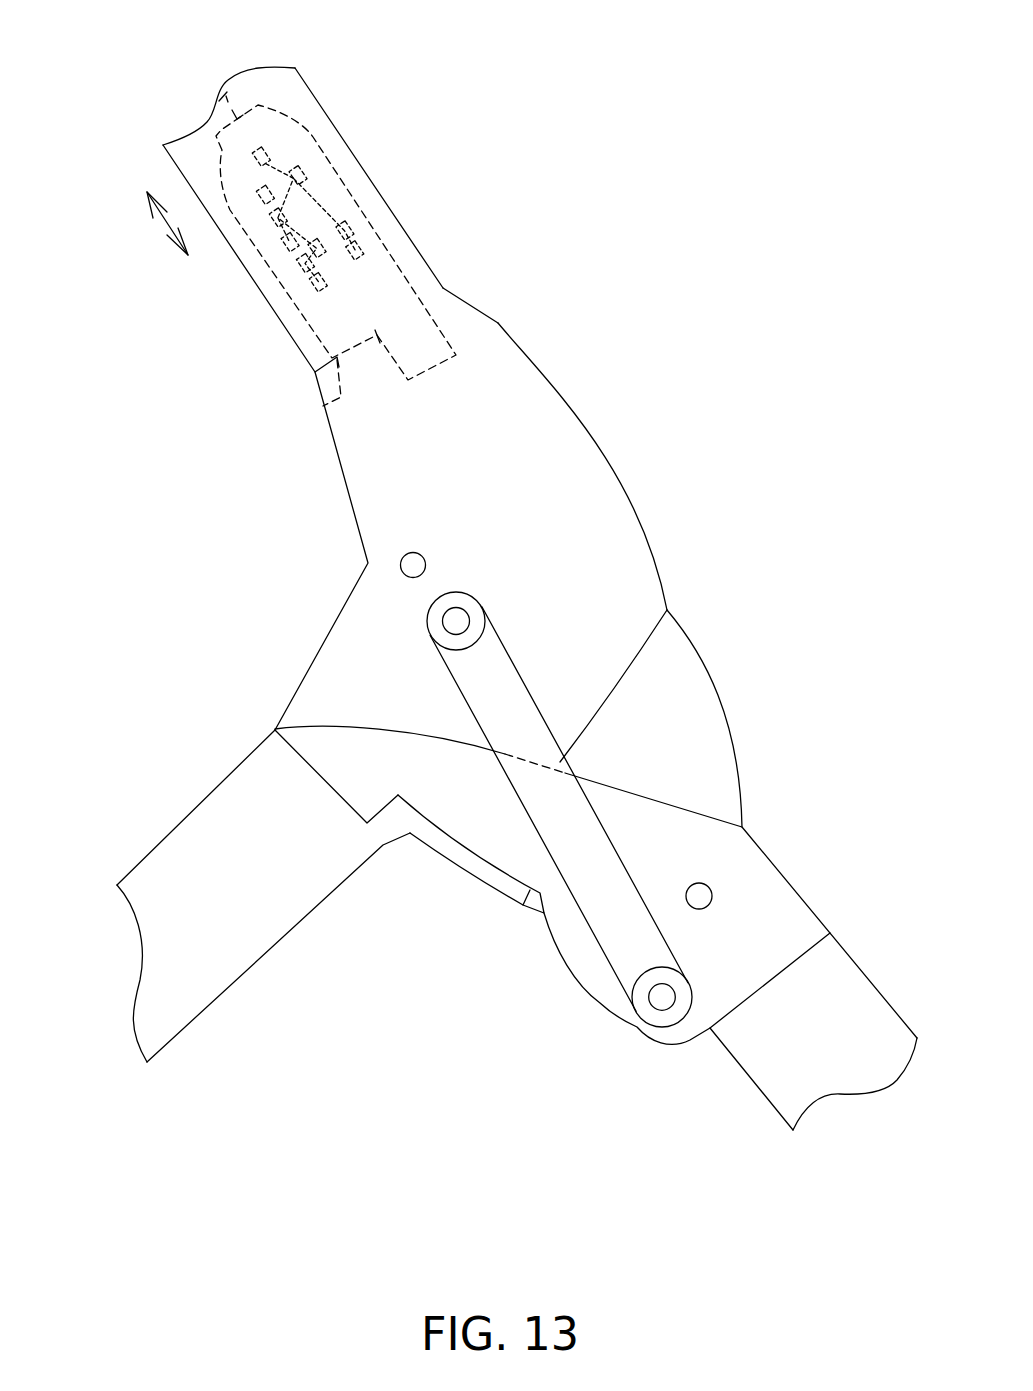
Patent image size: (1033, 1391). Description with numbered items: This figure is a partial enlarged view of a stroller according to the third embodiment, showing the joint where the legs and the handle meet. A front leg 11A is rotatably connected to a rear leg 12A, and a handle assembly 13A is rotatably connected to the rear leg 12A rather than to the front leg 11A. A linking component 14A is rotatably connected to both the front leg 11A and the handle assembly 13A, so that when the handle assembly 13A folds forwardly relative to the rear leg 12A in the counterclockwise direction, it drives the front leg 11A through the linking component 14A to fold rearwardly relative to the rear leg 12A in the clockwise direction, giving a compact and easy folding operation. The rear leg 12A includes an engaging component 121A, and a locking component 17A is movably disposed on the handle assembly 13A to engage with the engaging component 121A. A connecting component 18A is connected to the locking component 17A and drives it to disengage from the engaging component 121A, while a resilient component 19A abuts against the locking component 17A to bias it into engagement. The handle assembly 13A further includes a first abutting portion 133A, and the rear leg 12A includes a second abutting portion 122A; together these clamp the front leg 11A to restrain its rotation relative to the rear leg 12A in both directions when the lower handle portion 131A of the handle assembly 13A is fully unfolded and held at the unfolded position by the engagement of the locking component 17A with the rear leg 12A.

The front leg 11A is at (820, 1067).
The rear leg 12A is at (202, 837).
The engaging component 121A is at (373, 372).
The second abutting portion 122A is at (517, 753).
The handle assembly 13A is at (383, 134).
The lower handle portion 131A is at (183, 152).
The first abutting portion 133A is at (535, 762).
The linking component 14A is at (567, 823).
The locking component 17A is at (372, 305).
The connecting component 18A is at (223, 97).
The resilient component 19A is at (333, 265).